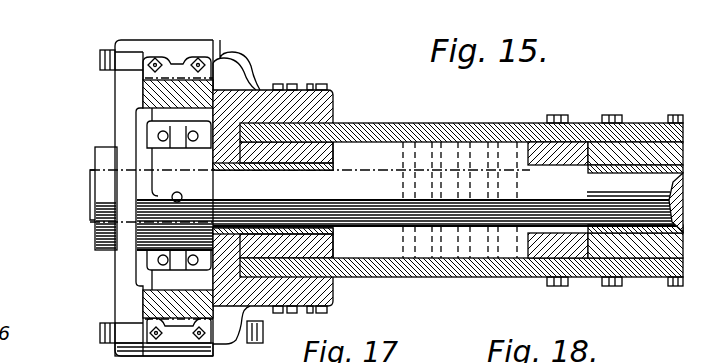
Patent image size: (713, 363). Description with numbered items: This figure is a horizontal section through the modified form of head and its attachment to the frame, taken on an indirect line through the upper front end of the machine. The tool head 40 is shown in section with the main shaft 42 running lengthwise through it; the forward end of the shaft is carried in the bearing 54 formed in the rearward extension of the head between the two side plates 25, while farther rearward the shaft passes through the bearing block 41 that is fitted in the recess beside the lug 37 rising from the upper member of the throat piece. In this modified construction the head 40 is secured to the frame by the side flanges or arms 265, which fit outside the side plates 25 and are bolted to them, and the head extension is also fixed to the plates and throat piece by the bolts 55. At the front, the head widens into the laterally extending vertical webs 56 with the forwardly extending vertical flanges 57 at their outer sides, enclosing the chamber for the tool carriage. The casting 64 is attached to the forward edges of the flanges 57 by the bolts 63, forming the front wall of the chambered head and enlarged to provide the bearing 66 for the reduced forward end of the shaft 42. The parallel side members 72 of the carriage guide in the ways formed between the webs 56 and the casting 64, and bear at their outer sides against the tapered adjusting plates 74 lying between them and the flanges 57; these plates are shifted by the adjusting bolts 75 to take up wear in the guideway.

The side plates 25 is at (432, 123).
The lug 37 is at (537, 252).
The tool head 40 is at (241, 86).
The bearing block 41 is at (623, 249).
The main shaft 42 is at (448, 202).
The bearing 54 is at (310, 153).
The bolts 55 is at (291, 84).
The vertical webs 56 is at (234, 331).
The vertical flanges 57 is at (174, 58).
The bolts 63 is at (99, 58).
The casting 64 is at (123, 126).
The bearing 66 is at (107, 243).
The side members 72 is at (145, 95).
The tapered adjusting plates 74 is at (210, 72).
The adjusting bolts 75 is at (201, 59).
The side flanges or arms 265 is at (338, 79).